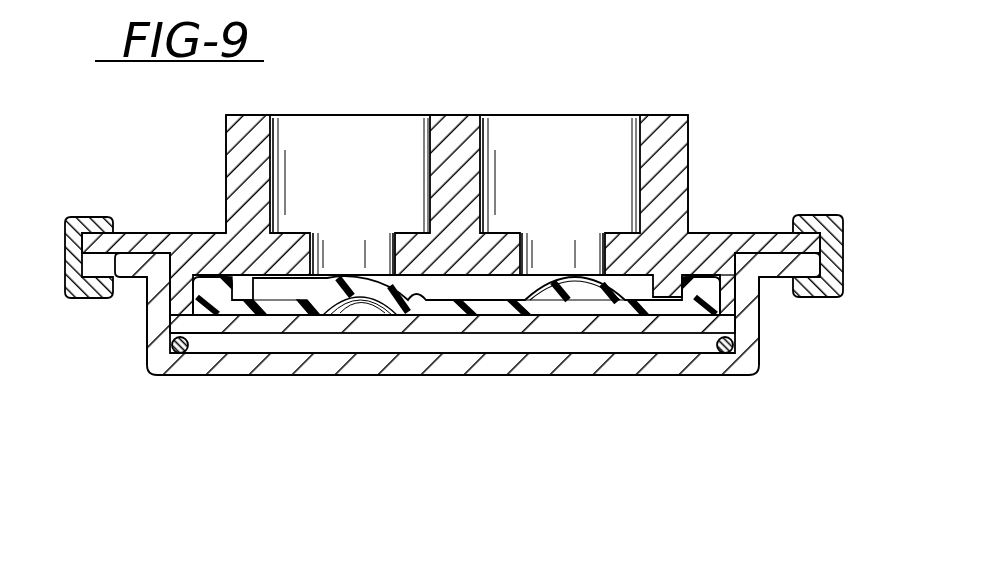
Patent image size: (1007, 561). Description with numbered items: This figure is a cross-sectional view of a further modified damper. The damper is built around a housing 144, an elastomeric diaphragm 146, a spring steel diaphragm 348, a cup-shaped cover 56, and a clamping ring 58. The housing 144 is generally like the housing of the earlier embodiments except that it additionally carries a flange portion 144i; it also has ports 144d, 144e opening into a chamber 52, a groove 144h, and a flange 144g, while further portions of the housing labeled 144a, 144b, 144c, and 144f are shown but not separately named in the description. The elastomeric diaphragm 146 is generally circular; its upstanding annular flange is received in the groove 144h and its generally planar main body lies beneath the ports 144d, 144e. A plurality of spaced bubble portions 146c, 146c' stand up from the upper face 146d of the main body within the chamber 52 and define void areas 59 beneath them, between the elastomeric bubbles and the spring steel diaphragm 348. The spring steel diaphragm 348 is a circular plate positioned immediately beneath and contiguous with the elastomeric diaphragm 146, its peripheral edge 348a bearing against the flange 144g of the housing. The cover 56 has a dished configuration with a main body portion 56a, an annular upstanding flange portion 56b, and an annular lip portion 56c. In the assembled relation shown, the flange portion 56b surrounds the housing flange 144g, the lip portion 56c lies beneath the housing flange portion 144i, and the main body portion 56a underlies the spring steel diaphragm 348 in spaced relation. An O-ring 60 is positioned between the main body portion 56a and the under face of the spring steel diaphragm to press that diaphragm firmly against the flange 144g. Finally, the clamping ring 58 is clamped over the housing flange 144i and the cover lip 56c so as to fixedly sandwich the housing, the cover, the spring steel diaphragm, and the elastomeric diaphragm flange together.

The housing 144 is at (696, 138).
The left wall of valve body 144a is at (227, 152).
The cylinder bore sleeve 144b is at (277, 144).
The right wall of valve body 144c is at (641, 128).
The port 144d is at (312, 252).
The port 144e is at (593, 247).
The lower lip of valve body 144f is at (688, 305).
The flange 144g is at (762, 330).
The groove 144h is at (713, 276).
The flange portion 144i is at (178, 232).
The elastomeric diaphragm 146 is at (533, 336).
The bubble portion 146c is at (369, 228).
The diaphragm boss 146c' is at (563, 230).
The upper face 146d is at (405, 325).
The chamber 52 is at (477, 268).
The cover member 56 is at (180, 386).
The main body portion 56a is at (627, 375).
The annular upstanding flange portion 56b is at (147, 337).
The annular lip portion 56c is at (761, 278).
The clamping ring 58 is at (847, 245).
The void area 59 is at (357, 306).
The O-ring 60 is at (150, 350).
The spring steel diaphragm 348 is at (300, 348).
The peripheral edge 348a is at (203, 352).